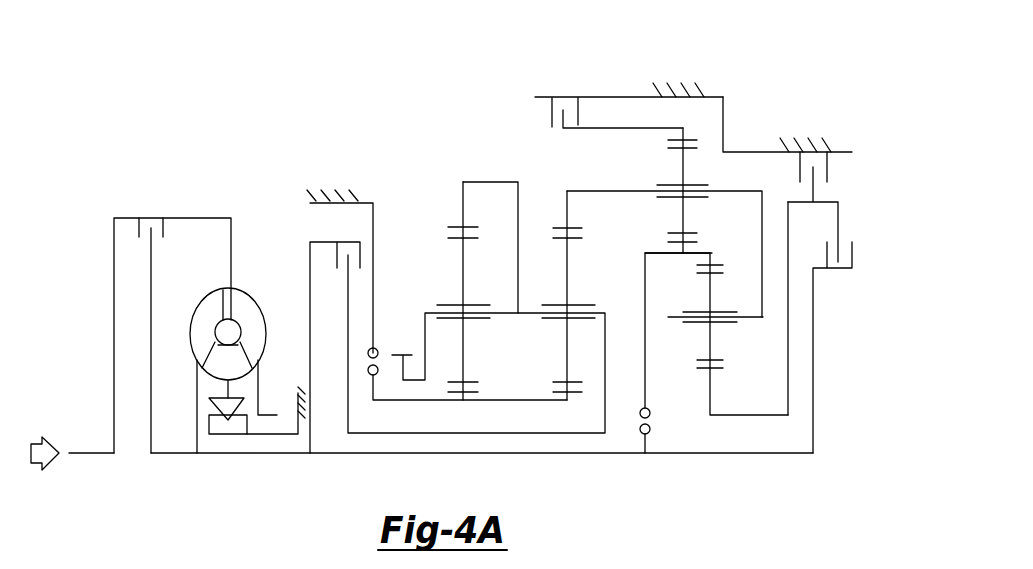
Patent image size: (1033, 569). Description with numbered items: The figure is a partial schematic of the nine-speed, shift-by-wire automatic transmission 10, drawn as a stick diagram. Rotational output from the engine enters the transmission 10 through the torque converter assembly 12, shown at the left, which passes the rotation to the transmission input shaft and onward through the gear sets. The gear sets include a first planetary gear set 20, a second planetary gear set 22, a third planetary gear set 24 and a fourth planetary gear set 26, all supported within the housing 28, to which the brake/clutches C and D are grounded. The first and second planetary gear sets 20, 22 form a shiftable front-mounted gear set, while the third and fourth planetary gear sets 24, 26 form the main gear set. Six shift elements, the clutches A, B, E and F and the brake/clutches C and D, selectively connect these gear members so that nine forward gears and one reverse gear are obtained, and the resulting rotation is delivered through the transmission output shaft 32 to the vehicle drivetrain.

The automatic transmission 10 is at (636, 50).
The torque converter assembly 12 is at (253, 280).
The first planetary gear set 20 is at (694, 344).
The second planetary gear set 22 is at (664, 170).
The third planetary gear set 24 is at (584, 273).
The fourth planetary gear set 26 is at (442, 247).
The housing 28 is at (747, 152).
The transmission output shaft 32 is at (378, 370).